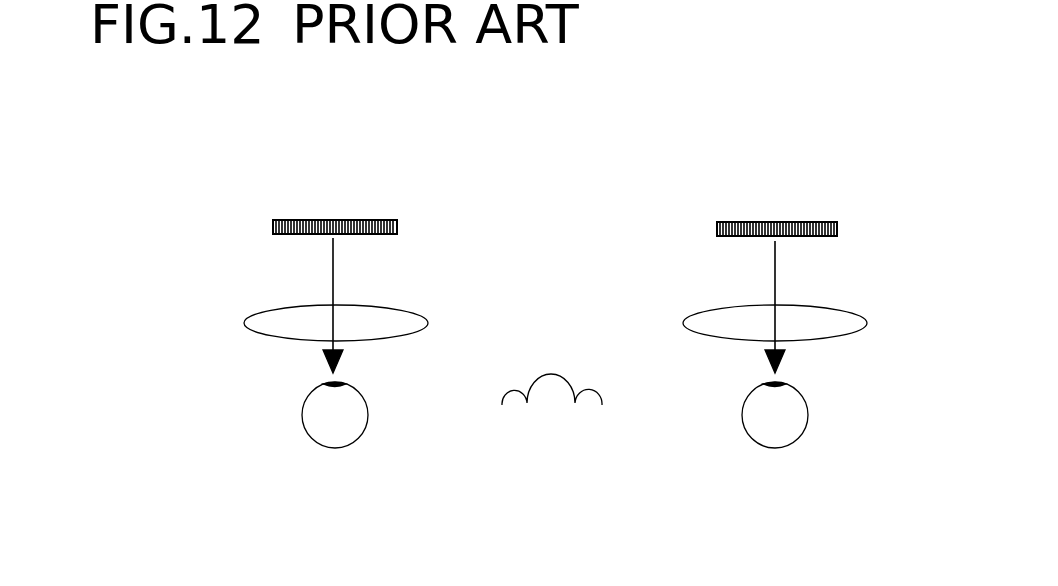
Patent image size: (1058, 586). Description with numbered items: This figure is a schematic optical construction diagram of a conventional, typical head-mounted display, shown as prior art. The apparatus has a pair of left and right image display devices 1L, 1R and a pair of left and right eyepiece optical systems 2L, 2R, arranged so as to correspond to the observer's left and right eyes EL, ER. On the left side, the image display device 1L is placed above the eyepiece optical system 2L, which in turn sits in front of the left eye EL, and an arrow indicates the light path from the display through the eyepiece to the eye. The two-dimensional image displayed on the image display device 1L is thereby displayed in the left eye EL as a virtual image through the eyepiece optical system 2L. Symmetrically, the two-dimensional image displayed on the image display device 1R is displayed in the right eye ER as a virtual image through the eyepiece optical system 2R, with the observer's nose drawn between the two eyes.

The image display device for the left eye 1L is at (273, 225).
The eyepiece optical system for the left eye 2L is at (246, 322).
The left eye EL is at (304, 422).
The image display device for the right eye 1R is at (837, 229).
The eyepiece optical system for the right eye 2R is at (867, 323).
The right eye ER is at (807, 422).